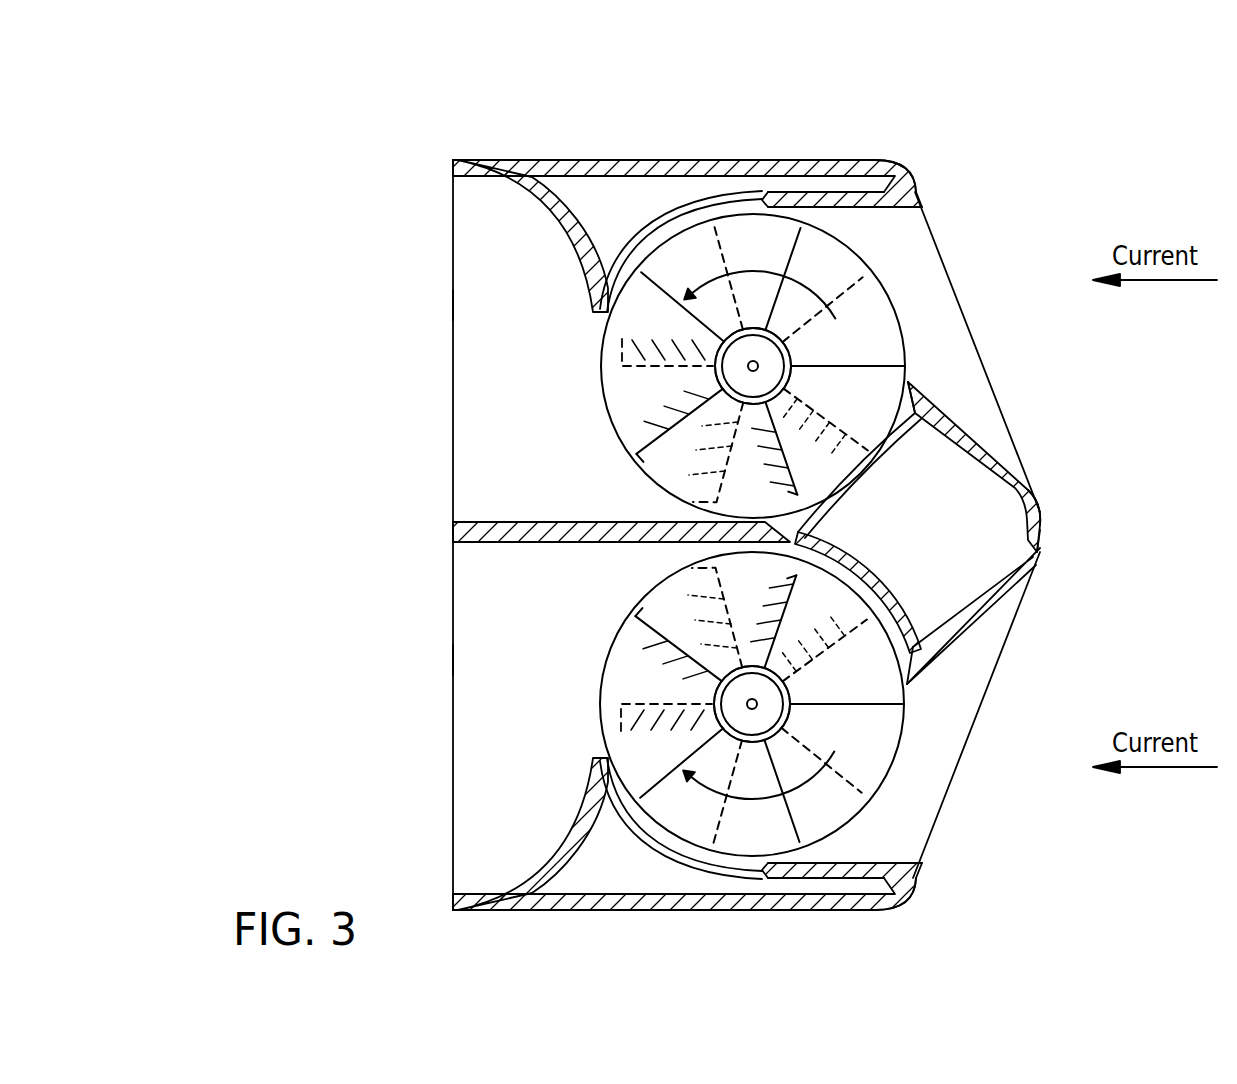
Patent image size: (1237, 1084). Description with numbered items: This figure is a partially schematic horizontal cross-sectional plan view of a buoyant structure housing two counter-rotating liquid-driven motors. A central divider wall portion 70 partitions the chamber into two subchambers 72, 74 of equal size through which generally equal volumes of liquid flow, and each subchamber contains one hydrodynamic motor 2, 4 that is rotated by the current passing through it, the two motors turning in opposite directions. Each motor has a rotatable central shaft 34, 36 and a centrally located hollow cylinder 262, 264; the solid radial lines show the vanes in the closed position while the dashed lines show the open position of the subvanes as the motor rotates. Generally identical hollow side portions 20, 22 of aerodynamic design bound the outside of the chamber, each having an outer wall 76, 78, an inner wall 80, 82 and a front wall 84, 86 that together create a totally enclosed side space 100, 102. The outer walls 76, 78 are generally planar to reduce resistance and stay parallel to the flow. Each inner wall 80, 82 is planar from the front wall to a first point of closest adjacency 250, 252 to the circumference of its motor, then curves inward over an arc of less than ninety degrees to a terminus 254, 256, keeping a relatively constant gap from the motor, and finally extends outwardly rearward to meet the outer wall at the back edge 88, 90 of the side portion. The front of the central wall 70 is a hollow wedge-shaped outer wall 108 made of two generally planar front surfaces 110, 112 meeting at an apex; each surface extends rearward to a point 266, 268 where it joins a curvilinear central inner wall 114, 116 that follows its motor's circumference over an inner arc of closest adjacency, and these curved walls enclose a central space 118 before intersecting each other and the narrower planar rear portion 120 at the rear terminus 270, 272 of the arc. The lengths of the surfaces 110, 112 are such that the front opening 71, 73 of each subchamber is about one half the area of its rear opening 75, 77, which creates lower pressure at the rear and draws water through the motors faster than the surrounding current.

The hydrodynamic motor 2 is at (915, 752).
The hydrodynamic motor 4 is at (912, 338).
The side portion 20 is at (742, 160).
The side portion 22 is at (582, 907).
The rotatable central shaft 34 is at (758, 364).
The rotatable central shaft 36 is at (758, 705).
The central divider wall portion 70 is at (470, 530).
The front opening 71 is at (967, 312).
The subchamber 72 is at (490, 400).
The front opening 73 is at (973, 712).
The subchamber 74 is at (470, 695).
The rear opening 75 is at (453, 305).
The outer wall 76 is at (573, 160).
The rear opening 77 is at (453, 660).
The outer wall 78 is at (785, 908).
The inner wall 80 is at (547, 207).
The inner wall 82 is at (560, 827).
The front wall 84 is at (905, 190).
The front wall 86 is at (907, 878).
The back edge 88 is at (455, 161).
The back edge 90 is at (450, 908).
The side space 100 is at (613, 187).
The side space 102 is at (590, 863).
The wedge-shaped outer wall 108 is at (1045, 517).
The planar front surface 110 is at (985, 437).
The planar front surface 112 is at (1005, 592).
The curvilinear central inner wall 114 is at (900, 457).
The curvilinear central inner wall 116 is at (880, 583).
The central space 118 is at (1042, 550).
The planar rear portion 120 is at (475, 505).
The first point of closest adjacency 250 is at (762, 200).
The first point of closest adjacency 252 is at (750, 868).
The terminus of the arc 254 is at (600, 320).
The terminus of the arc 256 is at (608, 758).
The hollow cylinder 262 is at (625, 365).
The hollow cylinder 264 is at (615, 700).
The point 266 is at (913, 378).
The point 268 is at (935, 678).
The rear terminus of the arc 270 is at (747, 512).
The rear terminus of the arc 272 is at (747, 553).